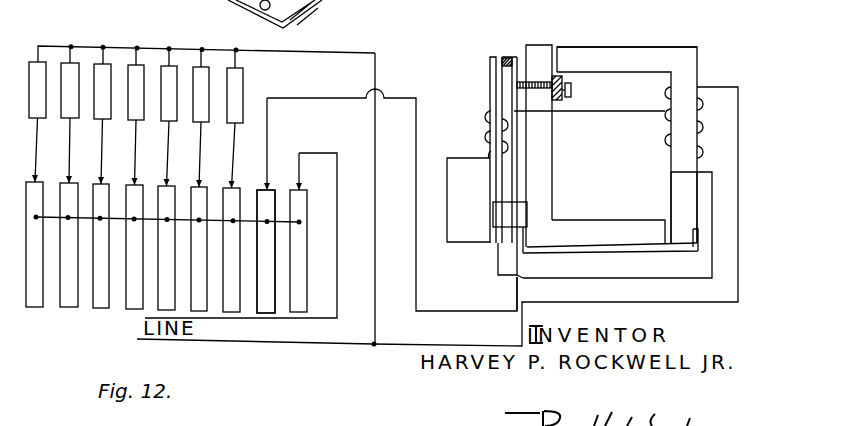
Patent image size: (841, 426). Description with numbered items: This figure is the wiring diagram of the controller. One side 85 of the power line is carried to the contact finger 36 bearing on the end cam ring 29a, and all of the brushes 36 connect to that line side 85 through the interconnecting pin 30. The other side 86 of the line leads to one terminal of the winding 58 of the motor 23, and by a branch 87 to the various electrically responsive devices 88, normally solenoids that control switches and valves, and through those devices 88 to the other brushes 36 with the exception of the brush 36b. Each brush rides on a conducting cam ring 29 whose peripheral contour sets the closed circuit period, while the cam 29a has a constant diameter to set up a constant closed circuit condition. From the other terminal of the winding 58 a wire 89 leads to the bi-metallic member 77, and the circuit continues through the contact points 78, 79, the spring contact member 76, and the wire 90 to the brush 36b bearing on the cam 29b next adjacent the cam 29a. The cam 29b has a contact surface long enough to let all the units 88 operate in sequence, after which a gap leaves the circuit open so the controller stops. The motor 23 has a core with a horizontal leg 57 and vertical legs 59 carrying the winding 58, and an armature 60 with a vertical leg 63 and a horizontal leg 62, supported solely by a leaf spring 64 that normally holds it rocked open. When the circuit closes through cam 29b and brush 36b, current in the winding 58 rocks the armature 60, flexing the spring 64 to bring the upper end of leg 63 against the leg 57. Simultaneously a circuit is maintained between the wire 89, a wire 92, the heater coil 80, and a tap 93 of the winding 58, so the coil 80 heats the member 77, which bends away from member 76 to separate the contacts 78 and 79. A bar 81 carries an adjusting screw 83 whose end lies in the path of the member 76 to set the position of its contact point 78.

The electrically responsive devices 88 is at (238, 88).
The conducting cam rings 29 is at (68, 300).
The end cam ring 29a is at (302, 202).
The cam ring 29b is at (262, 196).
The interconnecting pin 30 is at (282, 228).
The contact fingers 36 is at (303, 186).
The brush 36b is at (270, 183).
The power line side 85 is at (337, 263).
The branch 87 is at (377, 147).
The wire 90 is at (418, 280).
The power line side 86 is at (295, 343).
The bi-metallic member 77 is at (488, 92).
The contact point 78 is at (502, 57).
The contact point 79 is at (512, 57).
The vertical leg of the armature 63 is at (543, 45).
The armature 60 is at (547, 143).
The bar 81 is at (563, 95).
The adjusting screw 83 is at (573, 82).
The tap of the winding 93 is at (667, 112).
The heater coil 80 is at (483, 137).
The wire 92 is at (447, 180).
The spring contact member 76 is at (513, 180).
The horizontal leg of the core 57 is at (690, 60).
The motor 23 is at (628, 46).
The winding 58 is at (668, 143).
The vertical legs of the core 59 is at (678, 197).
The horizontal leg of the armature 62 is at (595, 226).
The leaf spring 64 is at (595, 253).
The wire 89 is at (712, 245).